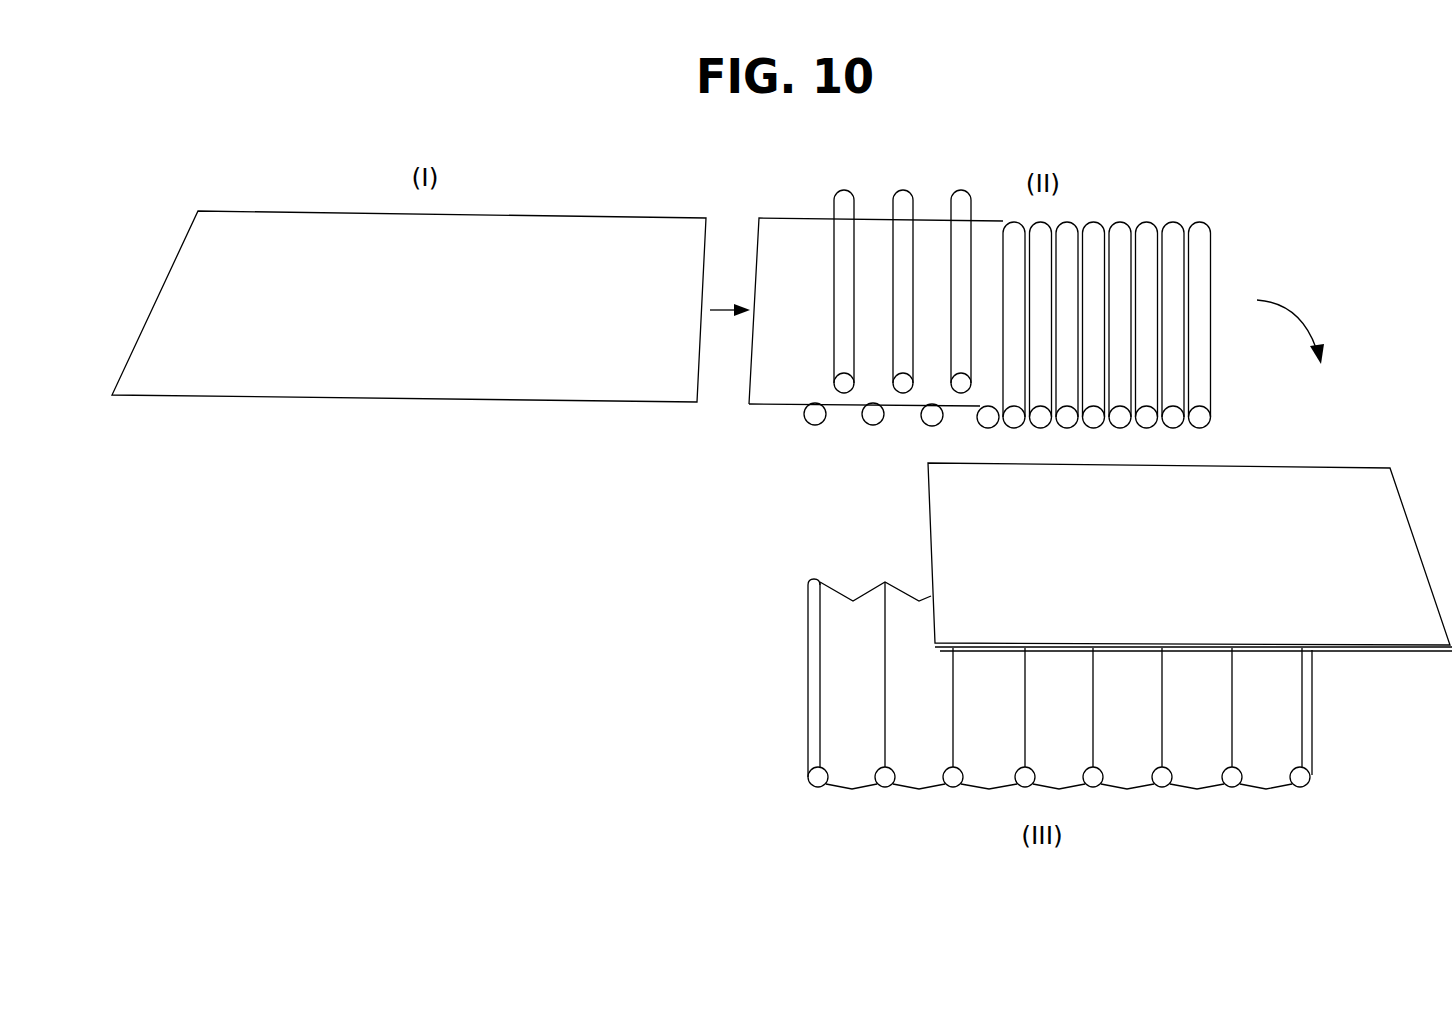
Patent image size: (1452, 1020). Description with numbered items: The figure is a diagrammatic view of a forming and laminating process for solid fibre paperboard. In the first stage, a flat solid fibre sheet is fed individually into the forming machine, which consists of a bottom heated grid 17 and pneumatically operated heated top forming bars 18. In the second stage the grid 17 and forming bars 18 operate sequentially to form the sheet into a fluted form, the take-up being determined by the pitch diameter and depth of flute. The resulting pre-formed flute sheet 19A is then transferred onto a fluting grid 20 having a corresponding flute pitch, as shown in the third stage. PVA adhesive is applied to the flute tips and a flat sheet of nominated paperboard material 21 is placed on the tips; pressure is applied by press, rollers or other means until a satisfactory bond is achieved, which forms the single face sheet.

The bottom heated grid 17 is at (816, 425).
The heated top forming bars 18 is at (904, 200).
The pre-formed flute sheet 19A is at (918, 763).
The fluting grid 20 is at (818, 787).
The flat sheet of paperboard material 21 is at (1350, 494).